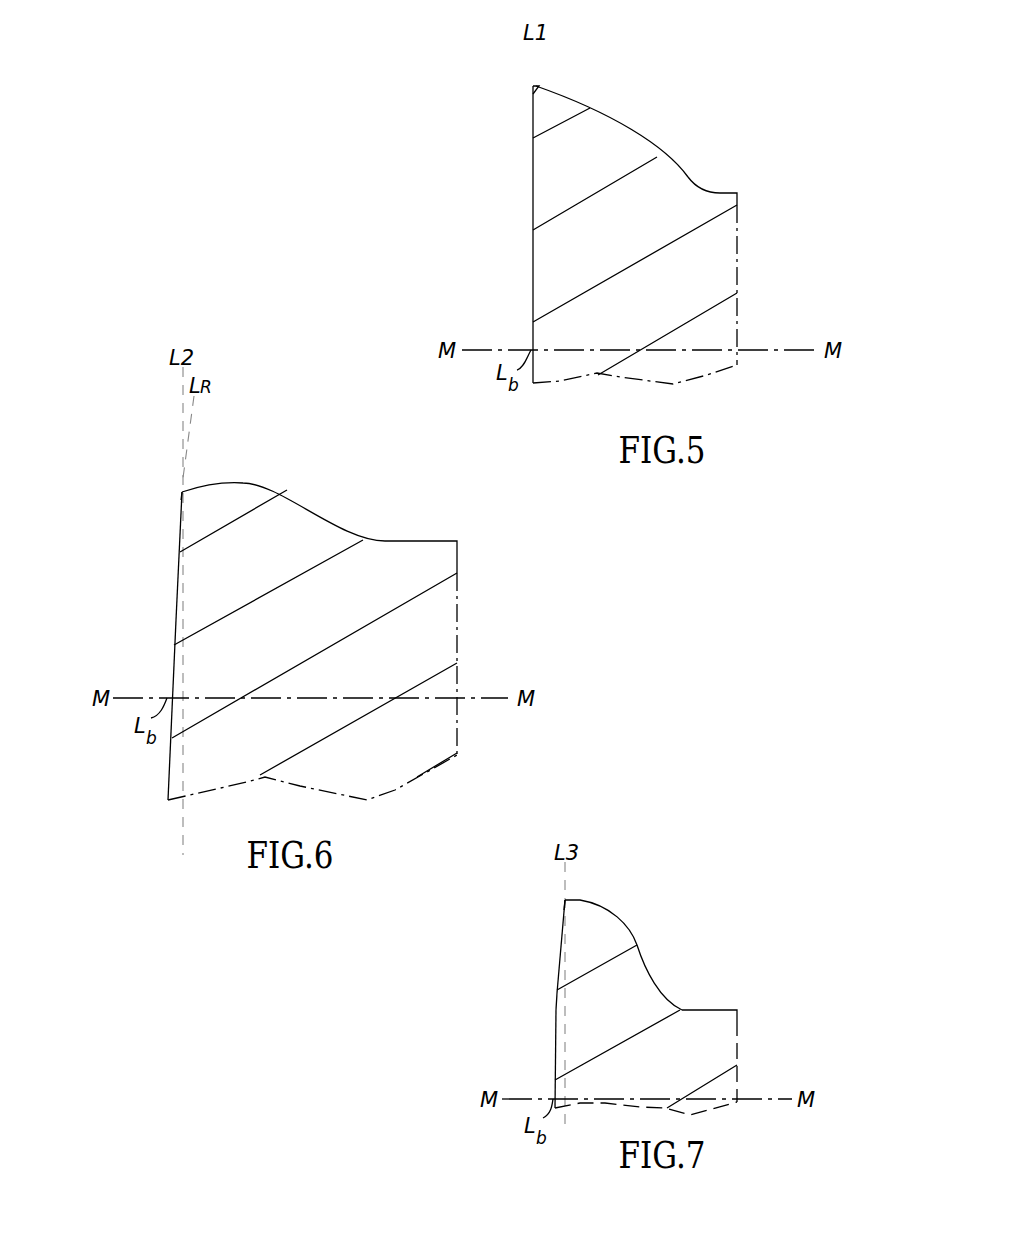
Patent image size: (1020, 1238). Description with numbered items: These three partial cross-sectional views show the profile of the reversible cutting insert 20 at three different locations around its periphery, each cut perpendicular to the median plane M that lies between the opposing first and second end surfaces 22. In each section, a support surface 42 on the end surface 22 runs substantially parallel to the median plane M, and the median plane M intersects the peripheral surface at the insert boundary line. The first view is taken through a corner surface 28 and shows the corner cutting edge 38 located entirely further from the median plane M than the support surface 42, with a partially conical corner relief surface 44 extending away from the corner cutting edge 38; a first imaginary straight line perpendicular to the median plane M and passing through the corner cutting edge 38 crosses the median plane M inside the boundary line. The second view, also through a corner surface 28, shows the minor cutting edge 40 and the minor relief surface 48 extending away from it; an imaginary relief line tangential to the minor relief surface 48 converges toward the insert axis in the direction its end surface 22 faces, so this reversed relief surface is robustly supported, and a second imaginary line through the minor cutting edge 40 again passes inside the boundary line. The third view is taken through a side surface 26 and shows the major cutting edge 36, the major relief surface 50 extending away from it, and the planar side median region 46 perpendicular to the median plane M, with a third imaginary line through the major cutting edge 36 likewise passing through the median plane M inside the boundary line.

In FIG. 5, the reversible cutting insert 20 is at (650, 138).
In FIG. 6, the reversible cutting insert 20 is at (460, 648).
In FIG. 7, the reversible cutting insert 20 is at (745, 1057).
In FIG. 6, the end surface 22 is at (243, 482).
In FIG. 7, the end surface 22 is at (645, 957).
In FIG. 7, the side surface 26 is at (557, 978).
In FIG. 5, the corner surface 28 is at (532, 257).
In FIG. 6, the corner surface 28 is at (172, 633).
In FIG. 7, the major cutting edge 36 is at (550, 901).
In FIG. 5, the corner cutting edge 38 is at (522, 89).
In FIG. 6, the minor cutting edge 40 is at (165, 496).
In FIG. 5, the support surface 42 is at (727, 193).
In FIG. 6, the support surface 42 is at (423, 541).
In FIG. 7, the support surface 42 is at (717, 1010).
In FIG. 5, the corner relief surface 44 is at (533, 163).
In FIG. 7, the side median region 46 is at (555, 1052).
In FIG. 6, the minor relief surface 48 is at (173, 602).
In FIG. 7, the major relief surface 50 is at (560, 957).